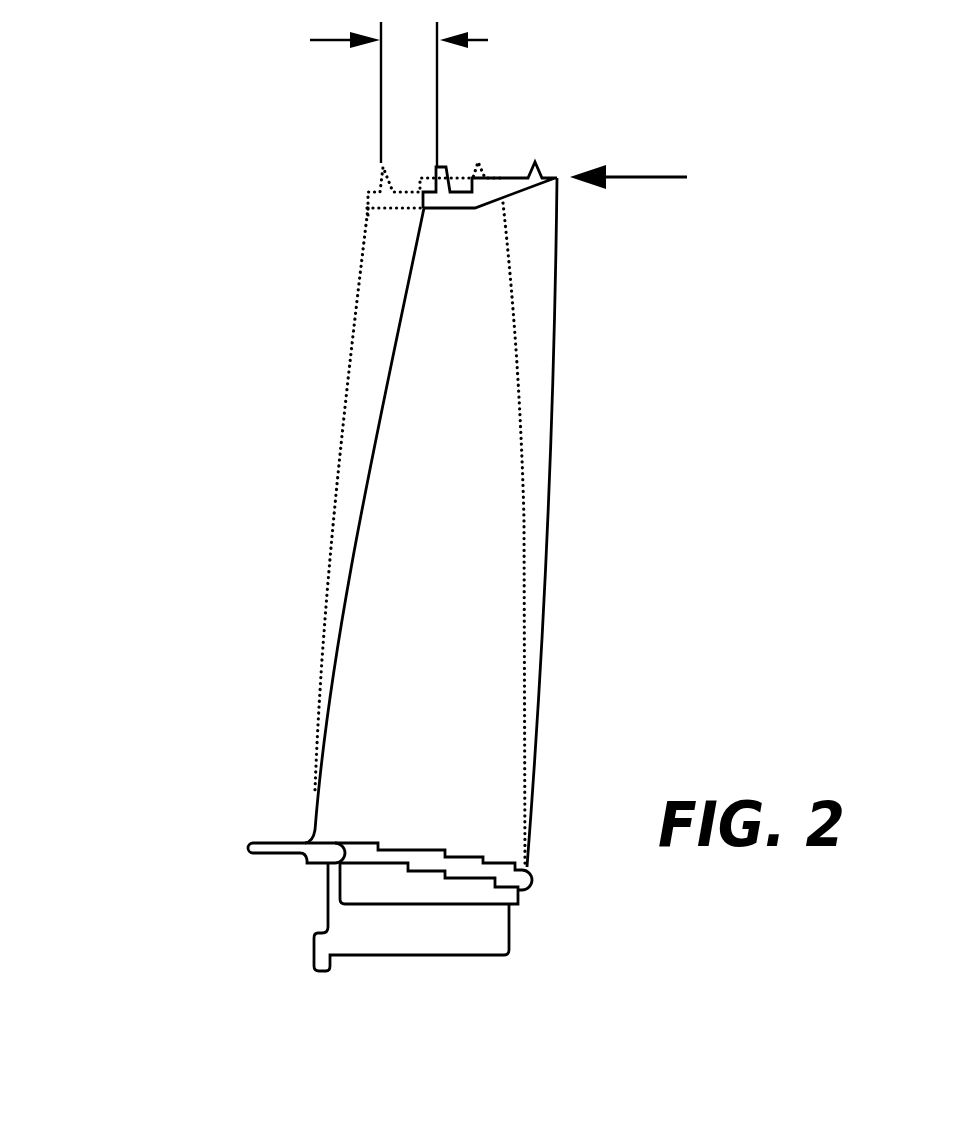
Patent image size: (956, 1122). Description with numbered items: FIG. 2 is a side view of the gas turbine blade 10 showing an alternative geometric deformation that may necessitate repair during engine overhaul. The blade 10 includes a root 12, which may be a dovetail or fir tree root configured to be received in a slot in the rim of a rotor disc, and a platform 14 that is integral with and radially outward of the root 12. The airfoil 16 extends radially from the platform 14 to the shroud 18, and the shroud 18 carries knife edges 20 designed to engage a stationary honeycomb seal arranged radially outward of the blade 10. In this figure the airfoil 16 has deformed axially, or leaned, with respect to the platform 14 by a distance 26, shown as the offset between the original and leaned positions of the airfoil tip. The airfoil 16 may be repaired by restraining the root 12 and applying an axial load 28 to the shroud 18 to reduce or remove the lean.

The gas turbine blade 10 is at (182, 250).
The root 12 is at (313, 953).
The platform 14 is at (250, 843).
The airfoil 16 is at (323, 638).
The shroud 18 is at (368, 202).
The knife edges 20 is at (502, 178).
The distance 26 is at (377, 94).
The axial load 28 is at (654, 177).